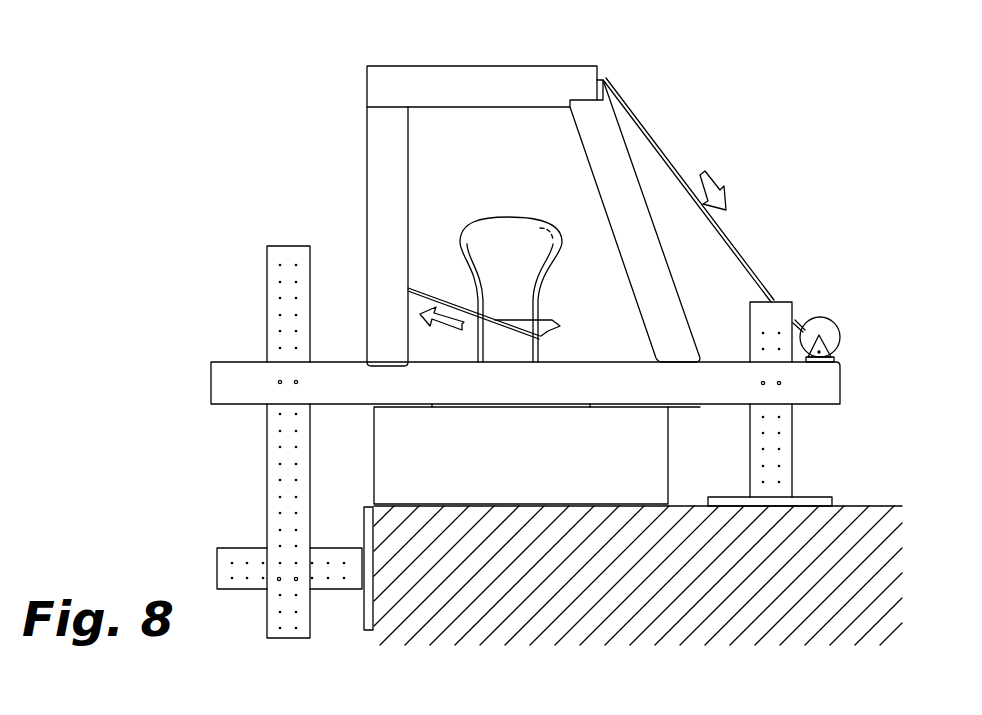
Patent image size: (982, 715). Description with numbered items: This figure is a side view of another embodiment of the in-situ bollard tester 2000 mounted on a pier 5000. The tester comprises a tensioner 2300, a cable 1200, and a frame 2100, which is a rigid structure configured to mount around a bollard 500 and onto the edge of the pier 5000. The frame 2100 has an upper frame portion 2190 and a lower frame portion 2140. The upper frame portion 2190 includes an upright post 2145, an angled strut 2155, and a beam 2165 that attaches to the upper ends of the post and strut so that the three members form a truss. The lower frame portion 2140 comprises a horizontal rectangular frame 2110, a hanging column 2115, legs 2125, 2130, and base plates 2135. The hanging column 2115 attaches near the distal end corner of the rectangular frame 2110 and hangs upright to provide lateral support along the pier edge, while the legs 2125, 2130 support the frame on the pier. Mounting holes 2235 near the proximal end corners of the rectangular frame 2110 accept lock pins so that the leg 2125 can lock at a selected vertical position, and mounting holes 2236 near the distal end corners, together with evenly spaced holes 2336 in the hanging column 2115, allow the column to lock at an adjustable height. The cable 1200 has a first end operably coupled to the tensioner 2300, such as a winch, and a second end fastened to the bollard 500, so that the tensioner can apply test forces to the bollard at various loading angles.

The bollard 500 is at (518, 215).
The cable 1200 is at (442, 292).
The in-situ bollard tester 2000 is at (822, 155).
The frame 2100 is at (272, 165).
The rectangular frame 2110 is at (407, 381).
The hanging column 2115 is at (267, 274).
The leg 2125 is at (792, 455).
The leg 2130 is at (240, 548).
The base plate 2135 is at (897, 470).
The lower frame portion 2140 is at (202, 427).
The post 2145 is at (365, 192).
The strut 2155 is at (643, 257).
The beam 2165 is at (478, 86).
The upper frame portion 2190 is at (350, 103).
The mounting hole 2235 is at (762, 382).
The mounting hole 2236 is at (279, 381).
The tensioner 2300 is at (840, 318).
The hole 2336 is at (278, 581).
The pier 5000 is at (642, 589).